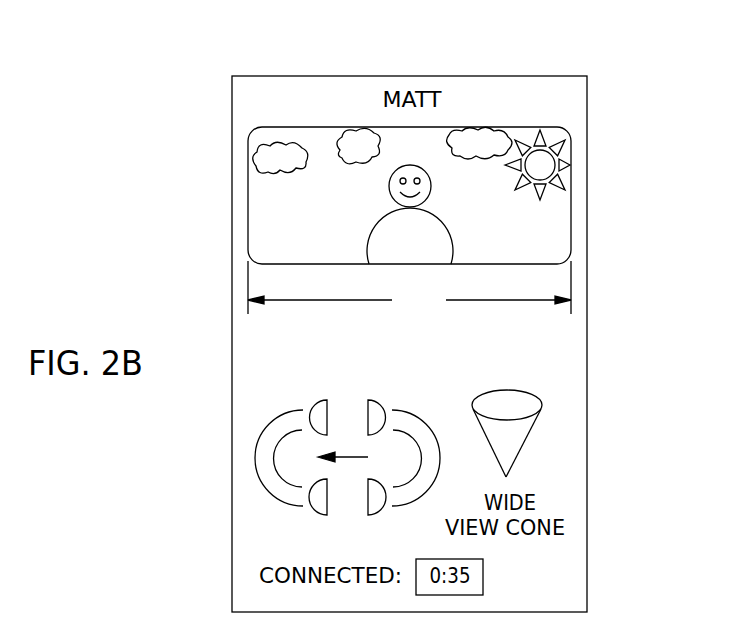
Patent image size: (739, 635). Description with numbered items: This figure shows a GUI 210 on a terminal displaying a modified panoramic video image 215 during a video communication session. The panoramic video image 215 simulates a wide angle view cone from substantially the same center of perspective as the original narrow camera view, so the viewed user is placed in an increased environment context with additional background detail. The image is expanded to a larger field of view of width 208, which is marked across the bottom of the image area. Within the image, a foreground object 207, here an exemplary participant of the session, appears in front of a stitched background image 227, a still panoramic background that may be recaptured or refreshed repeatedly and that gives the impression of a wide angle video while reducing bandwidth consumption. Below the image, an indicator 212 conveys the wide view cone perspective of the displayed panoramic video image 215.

The GUI 210 is at (686, 45).
The panoramic video image 215 is at (578, 124).
The stitched background image 227 is at (263, 190).
The foreground object 207 is at (423, 242).
The field of view width 208 is at (409, 287).
The indicator 212 is at (517, 401).